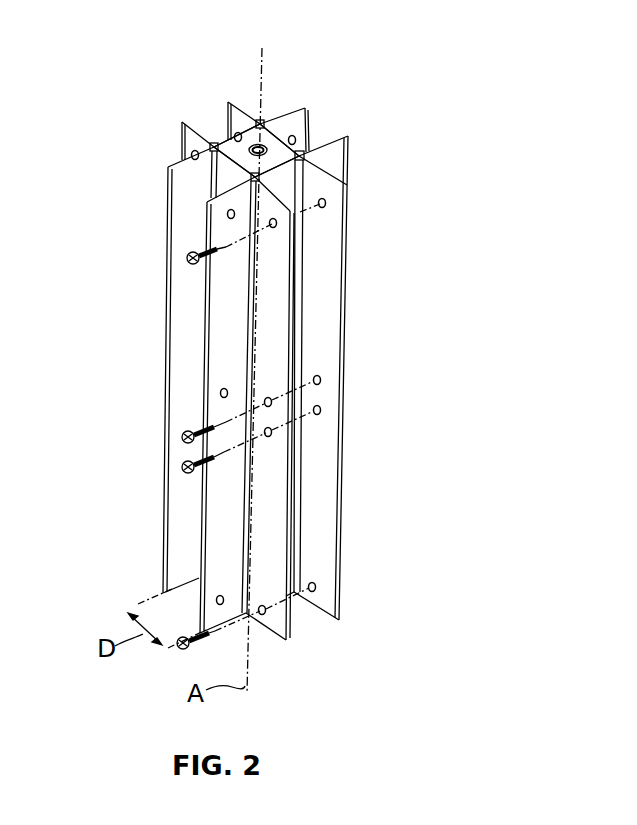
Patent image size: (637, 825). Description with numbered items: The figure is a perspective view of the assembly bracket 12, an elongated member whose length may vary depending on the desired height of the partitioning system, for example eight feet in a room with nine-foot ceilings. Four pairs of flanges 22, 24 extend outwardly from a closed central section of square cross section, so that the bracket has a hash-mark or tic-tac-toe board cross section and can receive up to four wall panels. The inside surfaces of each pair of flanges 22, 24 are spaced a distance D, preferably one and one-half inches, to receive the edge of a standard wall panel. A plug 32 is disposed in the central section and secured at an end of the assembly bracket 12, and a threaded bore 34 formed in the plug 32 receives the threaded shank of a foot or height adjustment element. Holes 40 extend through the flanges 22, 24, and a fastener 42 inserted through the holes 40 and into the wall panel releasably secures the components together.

The assembly bracket 12 is at (286, 374).
The flange 22 is at (183, 129).
The flange 24 is at (228, 122).
The plug 32 is at (253, 120).
The threaded bore 34 is at (261, 143).
The holes 40 is at (229, 216).
The fastener 42 is at (188, 258).